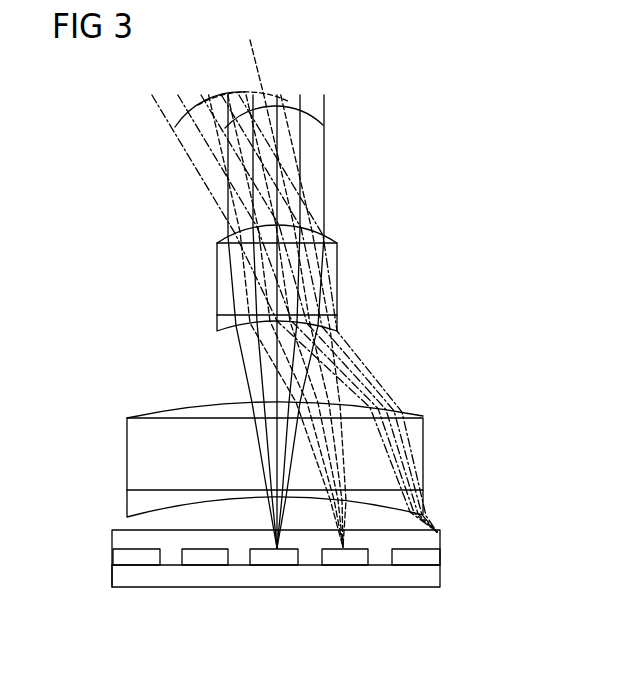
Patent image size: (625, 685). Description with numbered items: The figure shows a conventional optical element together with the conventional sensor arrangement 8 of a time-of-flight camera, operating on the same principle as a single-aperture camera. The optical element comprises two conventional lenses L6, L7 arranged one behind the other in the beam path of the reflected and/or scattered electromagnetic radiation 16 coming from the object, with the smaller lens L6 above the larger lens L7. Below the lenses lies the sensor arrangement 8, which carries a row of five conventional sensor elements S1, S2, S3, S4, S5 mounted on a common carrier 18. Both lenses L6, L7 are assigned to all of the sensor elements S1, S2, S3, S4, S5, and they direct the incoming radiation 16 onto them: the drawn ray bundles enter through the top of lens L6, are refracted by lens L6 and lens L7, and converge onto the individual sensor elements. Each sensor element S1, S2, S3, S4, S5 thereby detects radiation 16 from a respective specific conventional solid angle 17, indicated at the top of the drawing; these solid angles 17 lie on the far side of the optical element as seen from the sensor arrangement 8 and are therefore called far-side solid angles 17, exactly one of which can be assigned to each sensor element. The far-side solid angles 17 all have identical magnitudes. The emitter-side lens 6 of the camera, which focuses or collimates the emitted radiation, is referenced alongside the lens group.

The conventional far-side solid angle 17 is at (312, 113).
The reflected and/or scattered electromagnetic radiation 16 is at (366, 169).
The conventional emitter-side lens 6 is at (310, 371).
The conventional lens L6 is at (337, 279).
The conventional lens L7 is at (423, 455).
The conventional sensor arrangement 8 is at (315, 581).
The substrate 18 is at (112, 575).
The conventional sensor element S1 is at (135, 558).
The conventional sensor element S2 is at (206, 558).
The conventional sensor element S3 is at (275, 558).
The conventional sensor element S4 is at (345, 558).
The conventional sensor element S5 is at (415, 558).